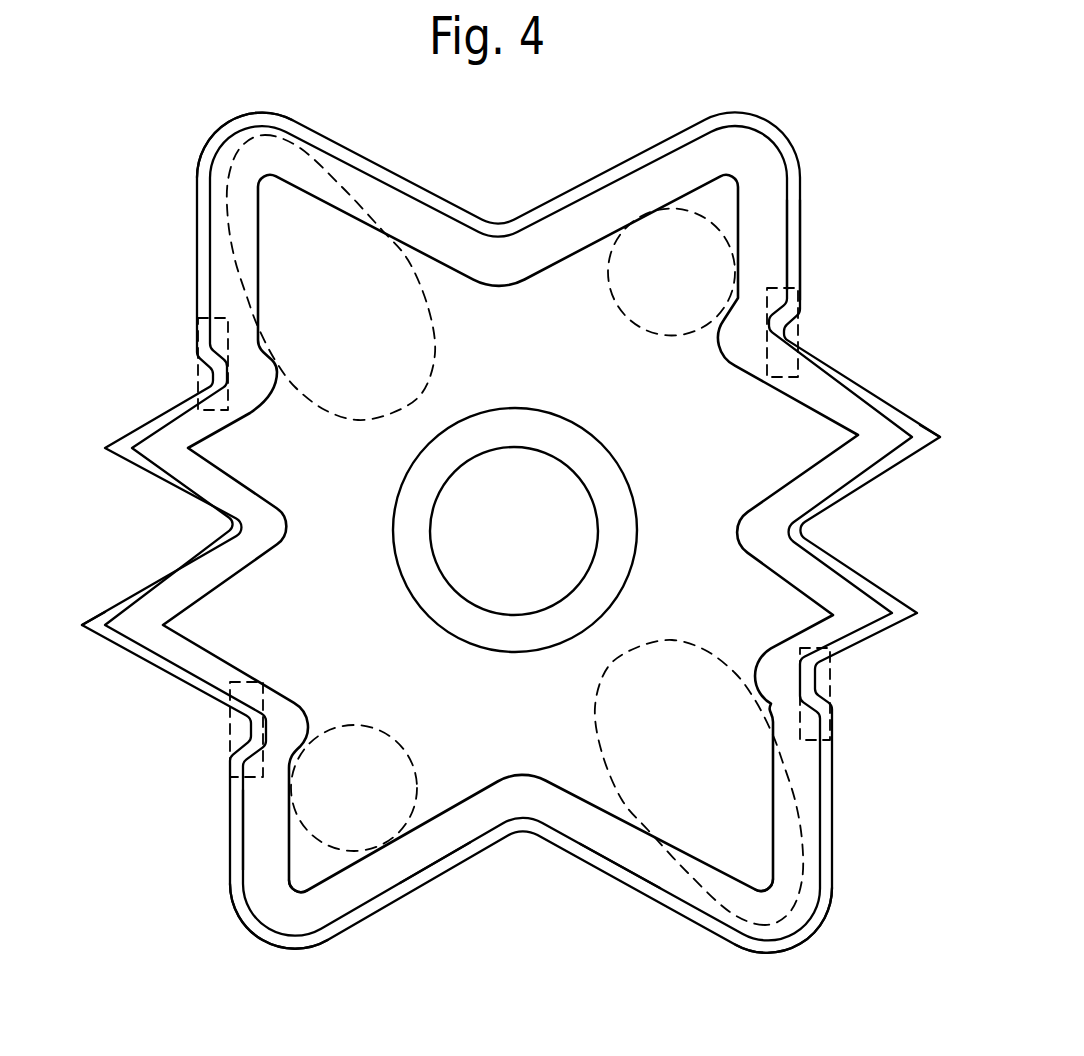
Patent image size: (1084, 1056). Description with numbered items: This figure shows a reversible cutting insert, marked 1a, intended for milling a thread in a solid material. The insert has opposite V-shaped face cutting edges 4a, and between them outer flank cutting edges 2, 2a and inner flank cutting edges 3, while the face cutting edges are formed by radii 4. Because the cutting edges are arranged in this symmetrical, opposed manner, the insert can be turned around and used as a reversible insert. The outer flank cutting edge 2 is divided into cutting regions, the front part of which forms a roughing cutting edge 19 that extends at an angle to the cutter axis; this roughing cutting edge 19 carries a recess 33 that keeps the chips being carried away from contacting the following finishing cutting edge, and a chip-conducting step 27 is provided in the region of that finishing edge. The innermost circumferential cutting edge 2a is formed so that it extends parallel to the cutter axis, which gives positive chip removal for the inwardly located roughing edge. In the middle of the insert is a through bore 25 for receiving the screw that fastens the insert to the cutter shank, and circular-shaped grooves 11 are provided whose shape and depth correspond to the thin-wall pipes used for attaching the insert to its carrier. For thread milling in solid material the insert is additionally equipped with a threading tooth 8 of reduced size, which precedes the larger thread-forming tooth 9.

The shaped plate 1a is at (303, 521).
The outer flank cutting edge 2 is at (207, 226).
The outer flank cutting edge 2a is at (240, 812).
The inner flank cutting edge 3 is at (441, 871).
The radius 4 is at (297, 951).
The face cutting edge 4a is at (261, 152).
The additional threading tooth 8 is at (165, 443).
The thread-forming tooth 9 is at (142, 627).
The groove 11 is at (648, 237).
The roughing cutting edge 19 is at (197, 172).
The through bore 25 is at (563, 485).
The chip-conducting step 27 is at (767, 243).
The recess 33 is at (320, 220).